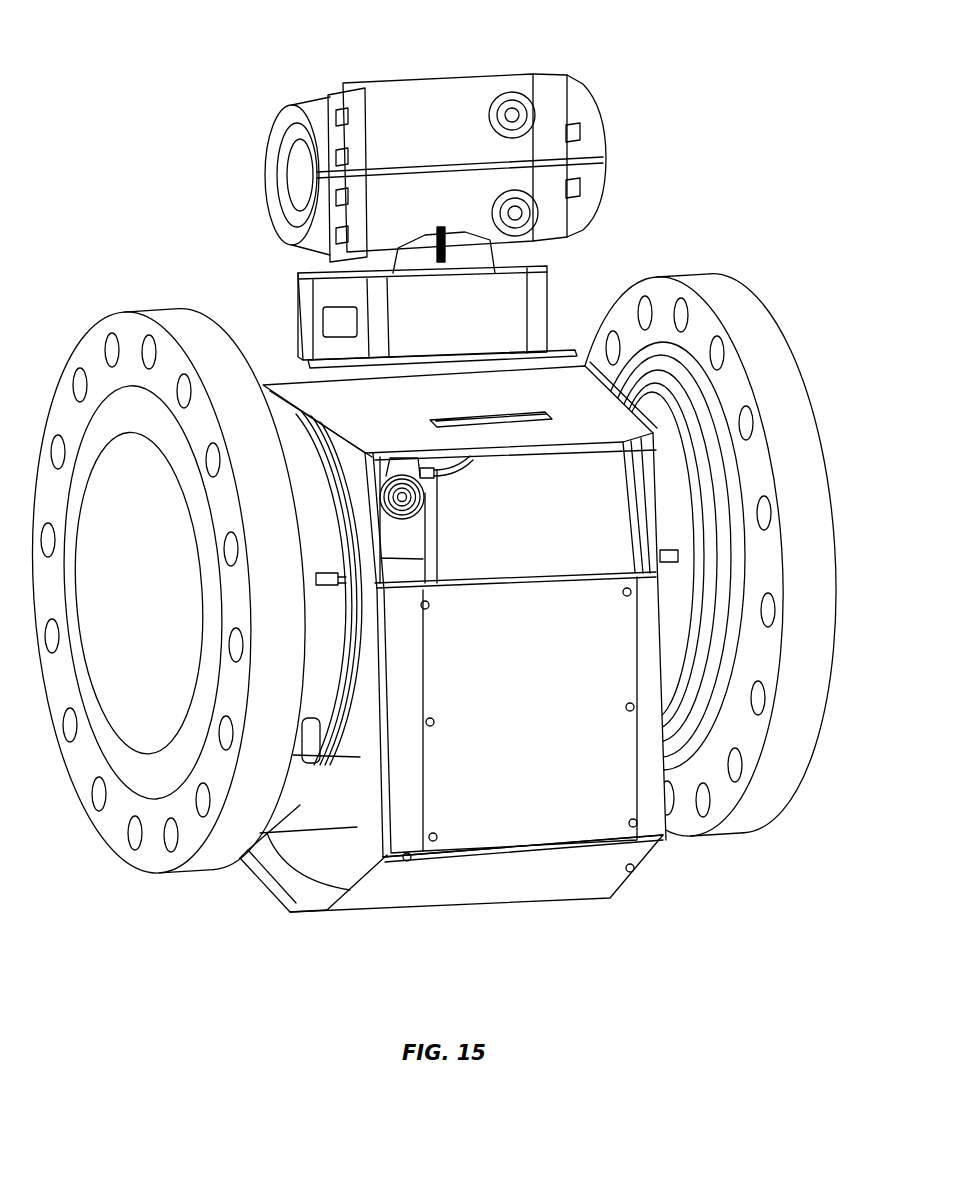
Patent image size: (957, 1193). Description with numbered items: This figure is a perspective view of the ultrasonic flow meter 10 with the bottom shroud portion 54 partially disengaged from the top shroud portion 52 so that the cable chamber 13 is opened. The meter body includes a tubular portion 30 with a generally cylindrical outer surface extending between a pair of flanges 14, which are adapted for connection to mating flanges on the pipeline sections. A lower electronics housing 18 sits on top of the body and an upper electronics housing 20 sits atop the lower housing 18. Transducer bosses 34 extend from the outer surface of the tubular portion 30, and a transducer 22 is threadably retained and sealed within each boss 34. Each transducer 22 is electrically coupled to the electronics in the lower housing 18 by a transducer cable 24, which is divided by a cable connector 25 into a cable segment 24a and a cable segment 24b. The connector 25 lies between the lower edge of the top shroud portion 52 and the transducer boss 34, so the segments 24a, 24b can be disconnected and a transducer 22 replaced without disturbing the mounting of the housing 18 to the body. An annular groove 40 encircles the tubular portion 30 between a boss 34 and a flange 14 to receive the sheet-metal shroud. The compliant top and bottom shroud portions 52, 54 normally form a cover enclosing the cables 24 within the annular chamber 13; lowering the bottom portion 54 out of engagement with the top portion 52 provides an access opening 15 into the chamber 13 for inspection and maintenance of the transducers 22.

The ultrasonic flow meter 10 is at (98, 58).
The annular chamber 13 is at (641, 477).
The flanges 14 is at (163, 317).
The access port or opening 15 is at (592, 530).
The lower electronics housing 18 is at (548, 292).
The upper electronics housing 20 is at (440, 107).
The transducer assembly 22 is at (407, 527).
The transducer cable 24 is at (430, 499).
The cable segment 24a is at (403, 452).
The cable segment 24b is at (455, 472).
The cable connector 25 is at (433, 465).
The tubular portion 30 is at (332, 620).
The transducer boss 34 is at (432, 517).
The annular groove 40 is at (270, 876).
The top shroud portion 52 is at (558, 380).
The bottom shroud portion 54 is at (625, 798).